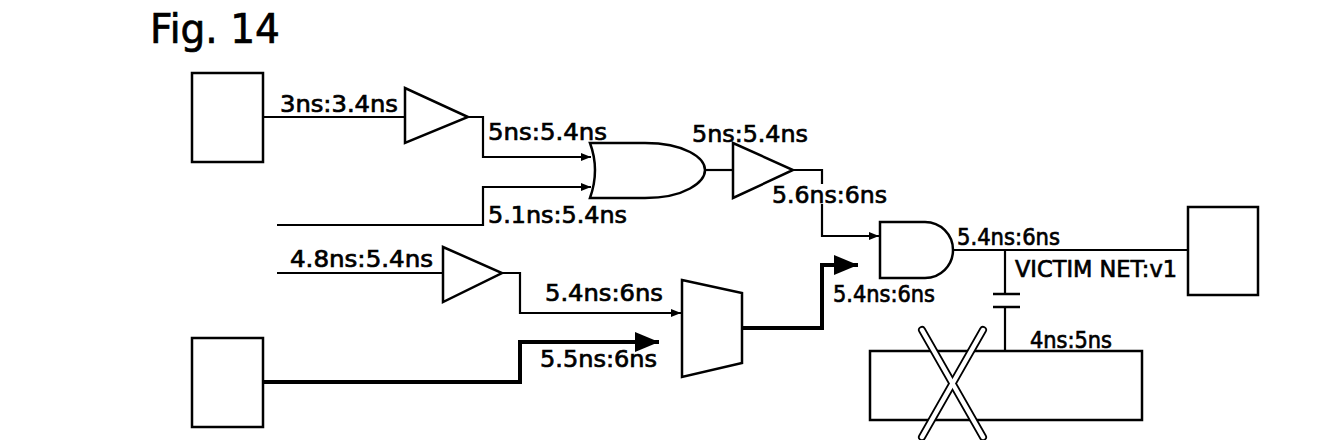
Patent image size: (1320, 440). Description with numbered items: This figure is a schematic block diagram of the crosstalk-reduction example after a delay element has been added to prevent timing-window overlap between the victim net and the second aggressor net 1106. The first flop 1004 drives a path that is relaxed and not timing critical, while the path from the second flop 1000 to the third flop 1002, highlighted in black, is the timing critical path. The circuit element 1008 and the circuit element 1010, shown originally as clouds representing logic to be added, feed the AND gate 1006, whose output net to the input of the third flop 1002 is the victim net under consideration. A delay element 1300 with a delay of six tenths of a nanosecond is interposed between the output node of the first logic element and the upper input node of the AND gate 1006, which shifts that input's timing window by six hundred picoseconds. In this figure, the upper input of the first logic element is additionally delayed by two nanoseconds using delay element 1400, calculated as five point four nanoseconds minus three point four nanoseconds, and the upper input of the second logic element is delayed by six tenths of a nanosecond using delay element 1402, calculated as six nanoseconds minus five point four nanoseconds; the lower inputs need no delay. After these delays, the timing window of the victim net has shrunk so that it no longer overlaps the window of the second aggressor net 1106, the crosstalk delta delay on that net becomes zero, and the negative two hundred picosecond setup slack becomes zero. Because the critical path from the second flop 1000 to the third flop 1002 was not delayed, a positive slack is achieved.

The flop FF1 1004 is at (255, 129).
The delay element 1400 is at (428, 133).
The cloud 1008 is at (653, 143).
The delay element 1300 is at (738, 200).
The AND gate 1006 is at (915, 222).
The flop FF3 1002 is at (1248, 265).
The delay element 1402 is at (465, 292).
The flop FF2 1000 is at (253, 395).
The cloud 1010 is at (712, 370).
The aggressor net n2 1106 is at (1032, 410).